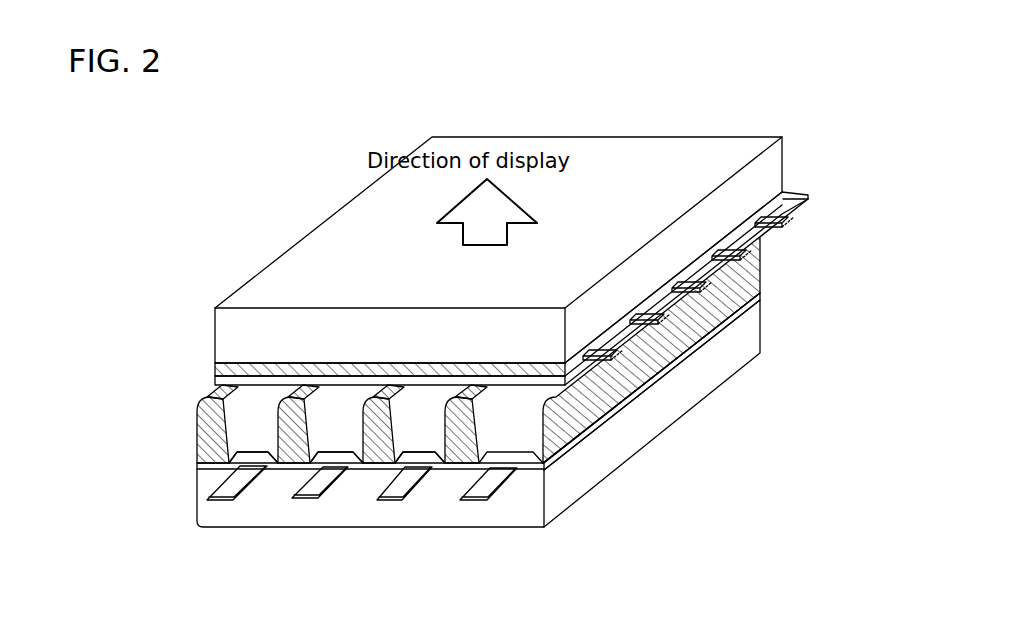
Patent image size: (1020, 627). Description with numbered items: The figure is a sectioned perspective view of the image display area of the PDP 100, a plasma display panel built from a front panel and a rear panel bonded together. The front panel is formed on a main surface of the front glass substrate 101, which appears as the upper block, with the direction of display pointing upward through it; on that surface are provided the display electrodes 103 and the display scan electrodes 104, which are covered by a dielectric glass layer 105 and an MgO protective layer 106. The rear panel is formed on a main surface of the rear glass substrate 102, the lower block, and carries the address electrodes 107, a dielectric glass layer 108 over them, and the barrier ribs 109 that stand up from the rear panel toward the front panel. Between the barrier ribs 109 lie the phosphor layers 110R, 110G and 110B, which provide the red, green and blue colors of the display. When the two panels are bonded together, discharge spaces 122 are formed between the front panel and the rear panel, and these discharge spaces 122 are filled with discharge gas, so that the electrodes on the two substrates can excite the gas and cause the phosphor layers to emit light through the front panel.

The PDP 100 is at (766, 328).
The front glass substrate 101 is at (222, 323).
The rear glass substrate 102 is at (440, 518).
The display electrodes 103 is at (733, 245).
The display scan electrodes 104 is at (753, 257).
The dielectric glass layer 105 is at (215, 368).
The MgO protective layer 106 is at (215, 382).
The address electrodes 107 is at (233, 490).
The dielectric glass layer 108 is at (202, 466).
The barrier ribs 109 is at (455, 433).
The phosphor layer 110R is at (280, 408).
The phosphor layer 110G is at (365, 405).
The phosphor layer 110B is at (470, 397).
The discharge spaces 122 is at (515, 405).